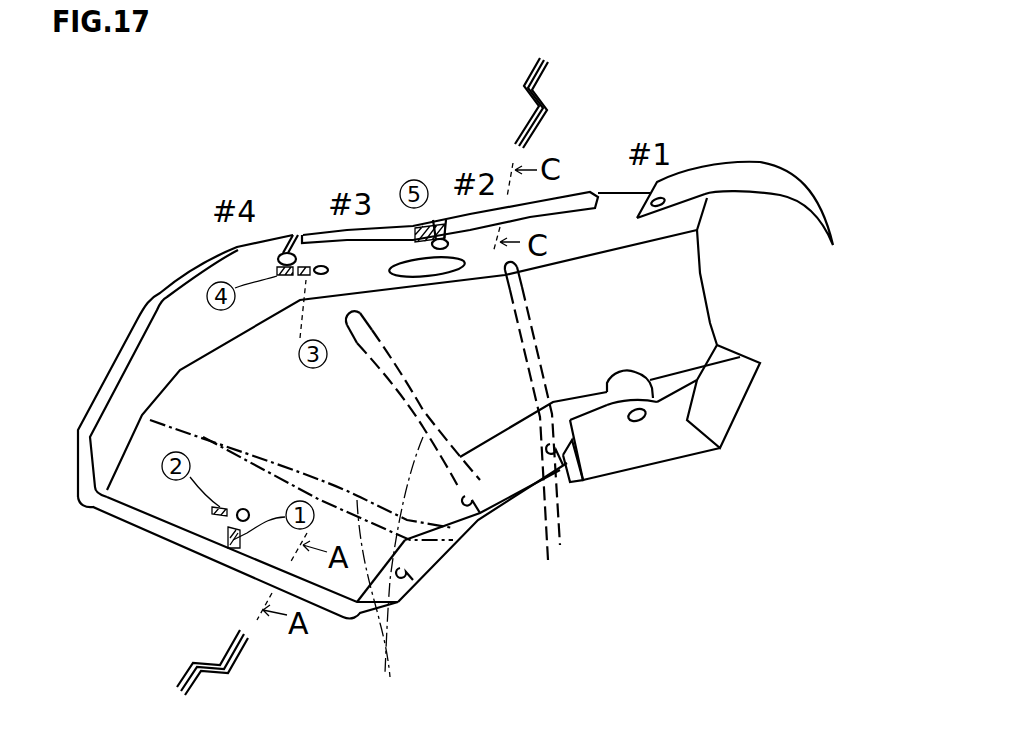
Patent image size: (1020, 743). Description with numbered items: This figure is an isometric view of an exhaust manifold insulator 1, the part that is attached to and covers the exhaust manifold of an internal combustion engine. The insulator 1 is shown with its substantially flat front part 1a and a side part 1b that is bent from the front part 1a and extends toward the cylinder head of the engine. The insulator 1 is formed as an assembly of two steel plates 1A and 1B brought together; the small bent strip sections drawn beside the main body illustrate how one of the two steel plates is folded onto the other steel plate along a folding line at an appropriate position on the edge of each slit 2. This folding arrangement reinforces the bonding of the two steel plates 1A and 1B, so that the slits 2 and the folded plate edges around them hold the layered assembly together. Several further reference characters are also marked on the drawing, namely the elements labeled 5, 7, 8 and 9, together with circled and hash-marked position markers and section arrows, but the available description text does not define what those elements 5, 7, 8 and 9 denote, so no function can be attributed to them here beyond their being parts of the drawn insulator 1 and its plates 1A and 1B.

The exhaust manifold insulator 1 is at (680, 292).
The front part 1a is at (593, 317).
The side part 1b is at (560, 230).
The steel plate 1A is at (540, 60).
The steel plate 1B is at (547, 63).
The slit 2 is at (292, 235).
The hole 5 is at (321, 264).
The rim section 7 is at (220, 567).
The rib 8 is at (453, 490).
The rim flange 9 is at (573, 193).